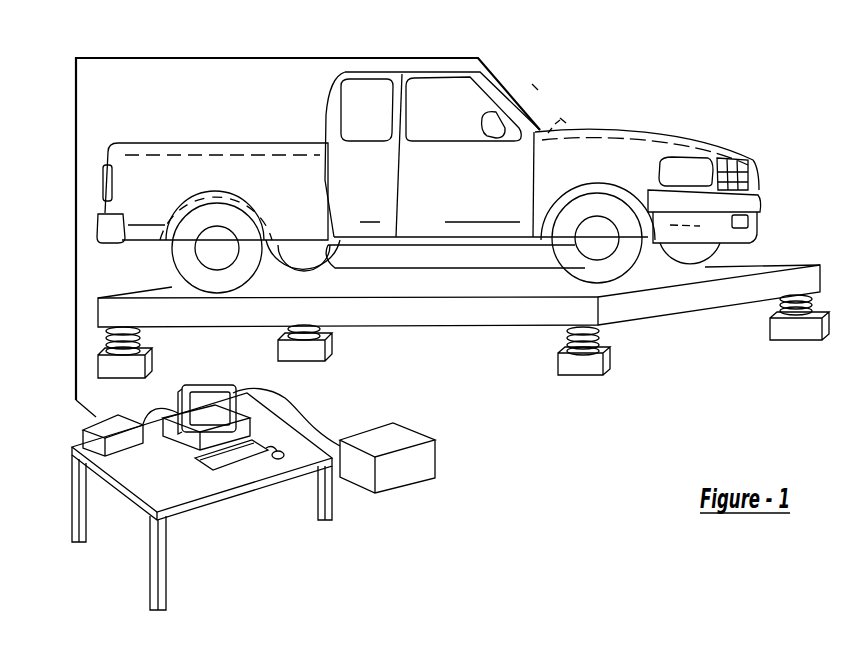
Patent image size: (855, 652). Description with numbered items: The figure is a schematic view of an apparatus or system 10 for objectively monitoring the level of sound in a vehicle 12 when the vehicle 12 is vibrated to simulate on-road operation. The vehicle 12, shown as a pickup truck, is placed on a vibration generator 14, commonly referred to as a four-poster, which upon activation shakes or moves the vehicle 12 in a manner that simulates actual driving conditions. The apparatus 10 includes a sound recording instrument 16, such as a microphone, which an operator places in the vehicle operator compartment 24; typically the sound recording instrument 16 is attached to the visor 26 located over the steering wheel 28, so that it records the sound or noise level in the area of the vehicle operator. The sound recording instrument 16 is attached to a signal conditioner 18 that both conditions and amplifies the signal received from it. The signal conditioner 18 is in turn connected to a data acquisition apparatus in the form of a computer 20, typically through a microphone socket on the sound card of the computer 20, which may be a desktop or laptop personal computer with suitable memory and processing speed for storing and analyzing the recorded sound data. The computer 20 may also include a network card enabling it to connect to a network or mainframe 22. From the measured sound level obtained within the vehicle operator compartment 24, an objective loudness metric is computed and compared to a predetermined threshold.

The apparatus 10 is at (423, 318).
The vehicle 12 is at (680, 134).
The vibration generator 14 is at (668, 300).
The sound recording instrument 16 is at (560, 118).
The signal conditioner 18 is at (83, 431).
The computer 20 is at (215, 382).
The network or mainframe 22 is at (435, 455).
The vehicle operator compartment 24 is at (552, 128).
The visor 26 is at (532, 84).
The steering wheel 28 is at (560, 120).